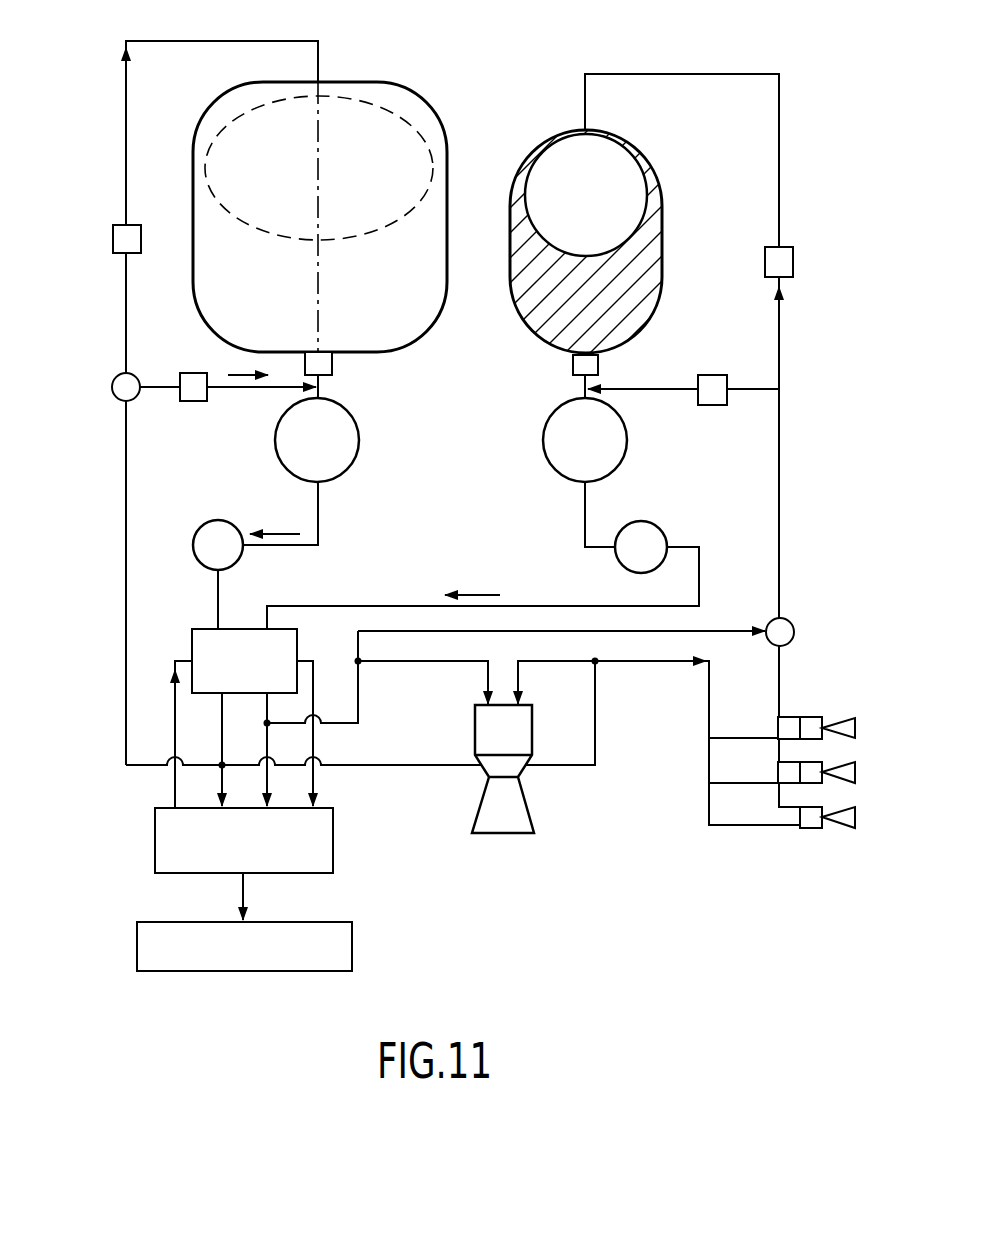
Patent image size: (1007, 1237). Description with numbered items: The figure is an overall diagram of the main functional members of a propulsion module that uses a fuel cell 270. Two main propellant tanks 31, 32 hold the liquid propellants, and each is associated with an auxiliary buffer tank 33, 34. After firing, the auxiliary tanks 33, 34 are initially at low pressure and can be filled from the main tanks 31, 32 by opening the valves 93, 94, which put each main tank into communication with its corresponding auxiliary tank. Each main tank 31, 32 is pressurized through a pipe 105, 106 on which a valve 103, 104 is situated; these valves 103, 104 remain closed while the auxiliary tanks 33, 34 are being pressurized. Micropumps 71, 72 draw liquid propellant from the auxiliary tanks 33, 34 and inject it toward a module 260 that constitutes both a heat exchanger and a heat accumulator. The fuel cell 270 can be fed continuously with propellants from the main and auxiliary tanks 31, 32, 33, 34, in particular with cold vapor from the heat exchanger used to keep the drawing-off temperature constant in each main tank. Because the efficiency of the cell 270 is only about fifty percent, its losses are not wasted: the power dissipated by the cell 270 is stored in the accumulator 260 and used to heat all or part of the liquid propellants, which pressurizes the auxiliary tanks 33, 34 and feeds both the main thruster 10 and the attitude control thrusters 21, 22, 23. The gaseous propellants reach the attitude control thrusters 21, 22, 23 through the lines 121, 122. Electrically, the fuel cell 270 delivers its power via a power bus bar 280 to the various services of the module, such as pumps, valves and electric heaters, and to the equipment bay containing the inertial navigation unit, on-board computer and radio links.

The main thruster 10 is at (518, 815).
The attitude control thruster 21 is at (820, 721).
The attitude control thruster 22 is at (820, 768).
The secondary thruster 23 is at (820, 813).
The main propellant tank 31 is at (387, 82).
The main propellant tank 32 is at (640, 144).
The auxiliary buffer tank 33 is at (360, 440).
The auxiliary buffer tank 34 is at (543, 440).
The micropump 71 is at (218, 532).
The micropump 72 is at (641, 535).
The valve 93 is at (332, 362).
The valve 94 is at (573, 364).
The valve 103 is at (113, 230).
The valve 104 is at (793, 258).
The pipe 105 is at (126, 106).
The pipe 106 is at (781, 160).
The line 121 is at (715, 632).
The line 122 is at (648, 662).
The module constituting a heat exchanger and heat accumulator 260 is at (193, 642).
The fuel cell 270 is at (155, 840).
The power bus bar 280 is at (137, 946).